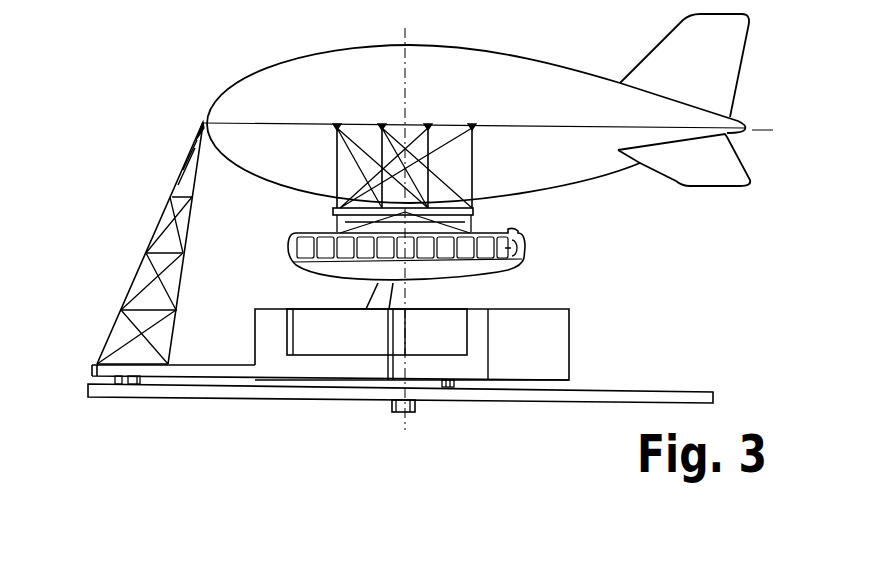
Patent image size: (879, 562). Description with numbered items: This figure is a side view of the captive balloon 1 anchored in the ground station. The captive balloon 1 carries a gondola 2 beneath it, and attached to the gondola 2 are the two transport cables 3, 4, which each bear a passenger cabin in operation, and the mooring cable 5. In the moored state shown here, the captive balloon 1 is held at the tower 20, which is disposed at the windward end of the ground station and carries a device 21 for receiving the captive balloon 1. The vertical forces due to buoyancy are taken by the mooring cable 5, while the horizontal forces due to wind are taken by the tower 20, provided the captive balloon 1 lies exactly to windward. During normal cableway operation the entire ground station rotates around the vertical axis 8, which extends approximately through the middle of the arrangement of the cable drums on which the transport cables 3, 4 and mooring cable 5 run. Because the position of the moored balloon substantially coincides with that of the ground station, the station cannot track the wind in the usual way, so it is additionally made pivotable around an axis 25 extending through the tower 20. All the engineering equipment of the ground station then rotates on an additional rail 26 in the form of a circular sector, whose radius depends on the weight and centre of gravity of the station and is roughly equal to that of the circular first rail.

The captive balloon 1 is at (298, 89).
The gondola 2 is at (520, 250).
The transport cable 3 is at (397, 305).
The transport cable 4 is at (393, 294).
The mooring cable 5 is at (365, 300).
The vertical axis 8 is at (407, 427).
The tower 20 is at (165, 207).
The device for receiving the captive balloon 21 is at (203, 122).
The axis 25 is at (130, 385).
The additional rail 26 is at (457, 382).